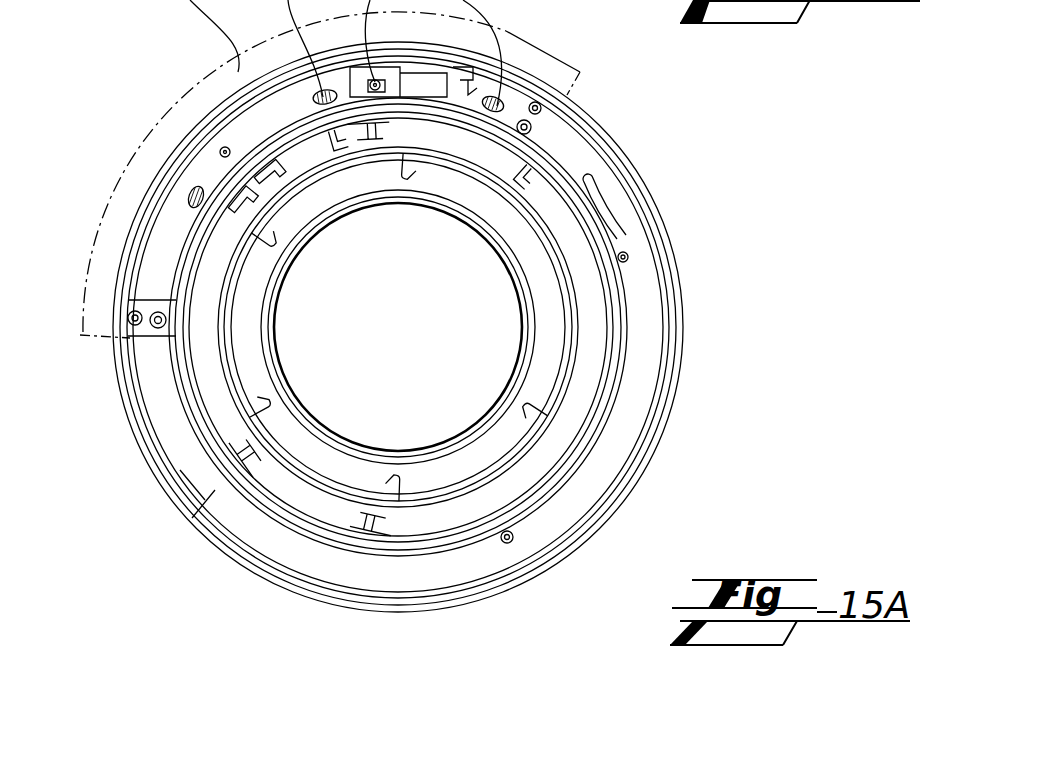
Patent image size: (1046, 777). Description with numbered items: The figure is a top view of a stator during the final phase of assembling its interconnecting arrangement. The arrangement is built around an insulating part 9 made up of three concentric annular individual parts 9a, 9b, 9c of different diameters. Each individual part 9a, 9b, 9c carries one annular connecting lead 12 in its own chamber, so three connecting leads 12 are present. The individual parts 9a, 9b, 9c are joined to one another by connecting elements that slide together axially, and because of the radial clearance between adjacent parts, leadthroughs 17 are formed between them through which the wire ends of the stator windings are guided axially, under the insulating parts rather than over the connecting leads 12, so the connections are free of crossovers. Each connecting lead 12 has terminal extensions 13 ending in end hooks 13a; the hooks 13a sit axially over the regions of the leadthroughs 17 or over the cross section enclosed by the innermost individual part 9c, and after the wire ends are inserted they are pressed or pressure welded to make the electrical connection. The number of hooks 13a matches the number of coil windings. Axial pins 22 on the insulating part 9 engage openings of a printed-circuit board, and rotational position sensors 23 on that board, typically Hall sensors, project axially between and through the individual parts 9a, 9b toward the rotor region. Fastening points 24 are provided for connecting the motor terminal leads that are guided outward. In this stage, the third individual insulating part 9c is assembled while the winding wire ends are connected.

The insulating part 9 is at (688, 216).
The individual part 9a is at (208, 112).
The individual part 9b is at (517, 548).
The individual part 9c is at (532, 357).
The connecting lead 12 is at (497, 250).
The terminal extension 13 is at (573, 478).
The end hook 13a is at (313, 417).
The leadthrough 17 is at (220, 243).
The axial pin 22 is at (223, 153).
The rotational position sensor 23 is at (197, 197).
The fastening point 24 is at (192, 518).